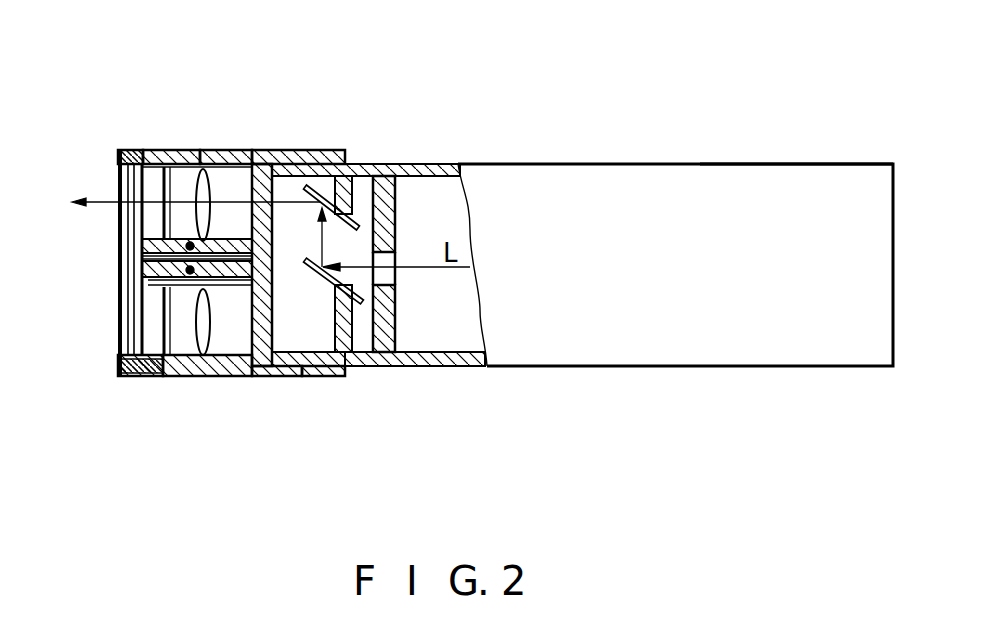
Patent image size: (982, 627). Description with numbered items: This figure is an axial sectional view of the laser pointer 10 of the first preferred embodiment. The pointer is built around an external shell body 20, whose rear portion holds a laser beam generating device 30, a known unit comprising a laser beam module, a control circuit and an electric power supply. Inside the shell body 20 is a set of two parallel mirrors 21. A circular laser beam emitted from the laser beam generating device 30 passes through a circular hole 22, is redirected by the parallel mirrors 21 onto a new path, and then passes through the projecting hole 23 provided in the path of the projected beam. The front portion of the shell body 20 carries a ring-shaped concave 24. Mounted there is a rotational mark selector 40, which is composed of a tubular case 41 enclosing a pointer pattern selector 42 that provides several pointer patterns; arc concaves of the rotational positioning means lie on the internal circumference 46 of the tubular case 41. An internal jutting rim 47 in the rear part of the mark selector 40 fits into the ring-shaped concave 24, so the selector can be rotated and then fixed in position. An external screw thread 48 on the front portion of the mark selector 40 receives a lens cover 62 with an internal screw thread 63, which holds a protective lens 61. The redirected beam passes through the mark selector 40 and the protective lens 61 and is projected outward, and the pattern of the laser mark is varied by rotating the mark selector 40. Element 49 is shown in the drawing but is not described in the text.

The optical device 10 is at (520, 106).
The external shell body 20 is at (373, 163).
The parallel mirrors 21 is at (320, 164).
The circular hole 22 is at (393, 350).
The projecting hole 23 is at (275, 162).
The ring-shaped concave 24 is at (292, 376).
The laser beam generating device 30 is at (760, 203).
The rotational mark selector 40 is at (256, 128).
The tubular case 41 is at (215, 150).
The pointer pattern selector 42 is at (184, 180).
The internal circumference 46 is at (150, 265).
The internal jutting rim 47 is at (302, 376).
The external screw thread 48 is at (146, 155).
The lower lens holder 49 is at (147, 290).
The protective lens 61 is at (122, 152).
The lens cover 62 is at (123, 377).
The internal screw thread 63 is at (150, 375).